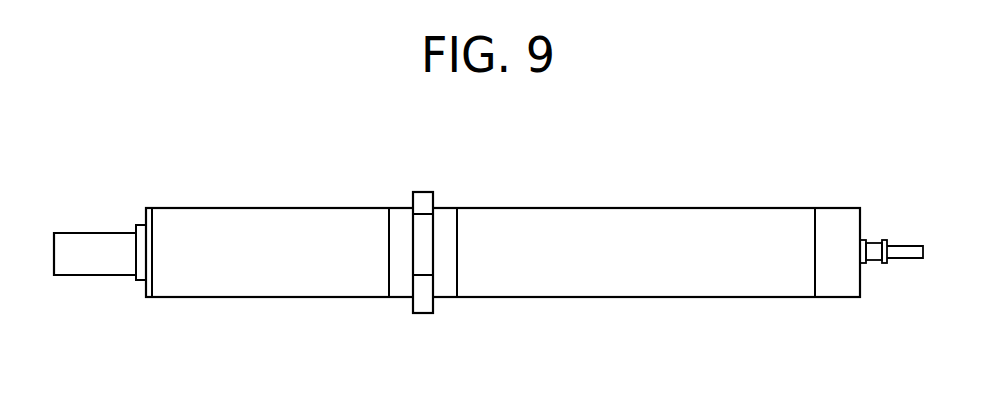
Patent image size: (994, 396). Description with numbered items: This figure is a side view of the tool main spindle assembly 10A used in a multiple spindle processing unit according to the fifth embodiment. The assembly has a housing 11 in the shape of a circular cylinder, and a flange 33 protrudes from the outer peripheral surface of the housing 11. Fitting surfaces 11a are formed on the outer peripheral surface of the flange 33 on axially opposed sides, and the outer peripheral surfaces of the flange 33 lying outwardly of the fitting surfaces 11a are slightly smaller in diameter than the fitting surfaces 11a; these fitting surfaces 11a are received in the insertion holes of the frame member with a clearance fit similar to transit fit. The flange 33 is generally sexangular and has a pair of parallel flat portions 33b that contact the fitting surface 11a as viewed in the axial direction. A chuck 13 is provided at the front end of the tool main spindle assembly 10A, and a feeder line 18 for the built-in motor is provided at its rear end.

The tool main spindle assembly 10A is at (551, 207).
The housing 11 is at (316, 228).
The fitting surfaces 11a is at (400, 284).
The chuck 13 is at (105, 261).
The feeder line 18 is at (905, 250).
The flange 33 is at (422, 200).
The flat portions 33b is at (428, 252).